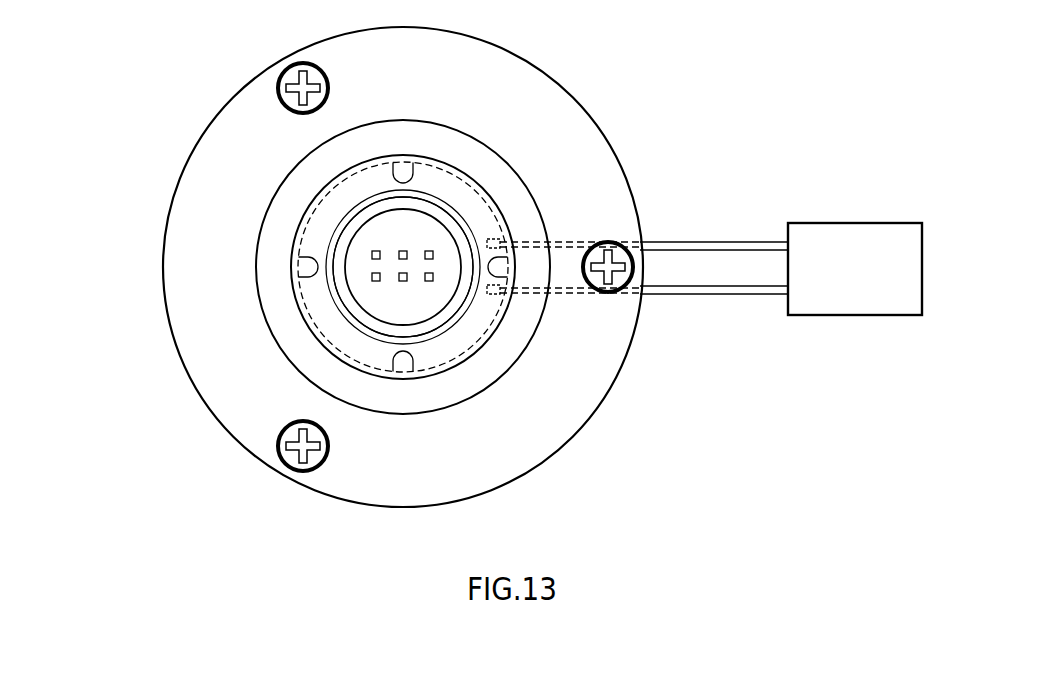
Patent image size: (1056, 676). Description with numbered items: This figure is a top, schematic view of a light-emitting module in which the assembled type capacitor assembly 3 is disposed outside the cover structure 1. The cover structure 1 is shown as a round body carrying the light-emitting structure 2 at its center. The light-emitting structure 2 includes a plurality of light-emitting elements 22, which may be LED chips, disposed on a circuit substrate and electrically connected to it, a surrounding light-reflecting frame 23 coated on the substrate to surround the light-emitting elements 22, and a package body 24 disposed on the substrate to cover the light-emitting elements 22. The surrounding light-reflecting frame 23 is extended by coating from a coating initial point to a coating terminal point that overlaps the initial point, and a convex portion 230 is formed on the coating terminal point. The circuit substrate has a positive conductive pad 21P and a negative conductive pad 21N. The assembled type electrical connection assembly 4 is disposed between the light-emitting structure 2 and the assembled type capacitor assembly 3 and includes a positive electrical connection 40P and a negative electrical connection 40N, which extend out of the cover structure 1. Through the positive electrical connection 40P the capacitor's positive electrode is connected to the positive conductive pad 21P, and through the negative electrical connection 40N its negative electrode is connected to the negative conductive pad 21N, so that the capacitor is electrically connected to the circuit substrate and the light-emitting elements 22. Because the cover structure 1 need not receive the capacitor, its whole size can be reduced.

The cover structure 1 is at (200, 125).
The light-emitting structure 2 is at (486, 187).
The assembled type capacitor assembly 3 is at (930, 272).
The assembled type electrical connection assembly 4 is at (714, 270).
The positive conductive pad 21P is at (490, 240).
The negative conductive pad 21N is at (493, 294).
The light-emitting elements 22 is at (376, 283).
The surrounding light-reflecting frame 23 is at (345, 241).
The package body 24 is at (428, 303).
The convex portion 230 is at (340, 292).
The positive electrical connection 40P is at (722, 241).
The negative electrical connection 40N is at (722, 294).